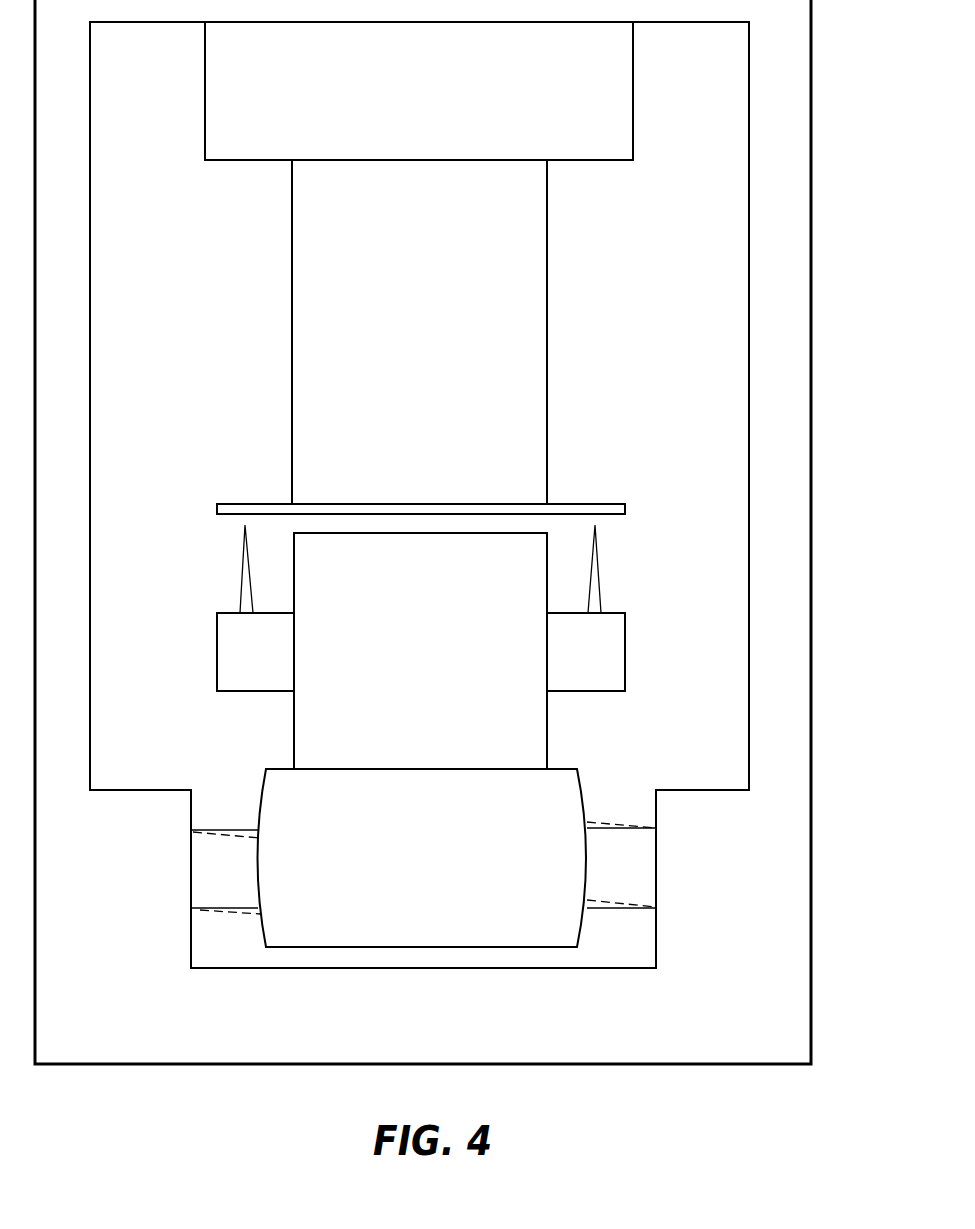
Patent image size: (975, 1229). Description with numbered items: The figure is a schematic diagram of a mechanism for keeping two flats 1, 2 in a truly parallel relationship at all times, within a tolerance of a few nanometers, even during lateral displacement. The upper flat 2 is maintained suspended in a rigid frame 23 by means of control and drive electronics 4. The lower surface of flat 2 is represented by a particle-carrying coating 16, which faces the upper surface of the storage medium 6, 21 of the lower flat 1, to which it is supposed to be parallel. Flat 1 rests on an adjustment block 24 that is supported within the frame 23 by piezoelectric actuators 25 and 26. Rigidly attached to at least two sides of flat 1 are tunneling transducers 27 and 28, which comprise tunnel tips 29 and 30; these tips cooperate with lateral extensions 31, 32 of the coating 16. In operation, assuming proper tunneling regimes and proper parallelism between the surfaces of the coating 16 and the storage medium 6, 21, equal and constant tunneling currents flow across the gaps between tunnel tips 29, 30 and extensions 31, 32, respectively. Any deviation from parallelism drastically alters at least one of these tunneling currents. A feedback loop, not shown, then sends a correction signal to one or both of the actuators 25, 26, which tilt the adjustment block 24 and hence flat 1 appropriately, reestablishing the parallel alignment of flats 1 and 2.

The flat 1 is at (540, 734).
The flat 2 is at (541, 367).
The control and drive electronics 4 is at (428, 106).
The storage medium 6 is at (371, 534).
The coating 16 is at (352, 514).
The storage medium 21 is at (433, 687).
The rigid frame 23 is at (799, 975).
The adjustment block 24 is at (434, 875).
The piezoelectric actuator 25 is at (226, 841).
The piezoelectric actuator 26 is at (619, 837).
The tunneling transducer 27 is at (222, 672).
The tunneling transducer 28 is at (622, 672).
The tunnel tip 29 is at (244, 586).
The tunnel tip 30 is at (596, 586).
The lateral extension 31 is at (232, 503).
The lateral extension 32 is at (607, 503).